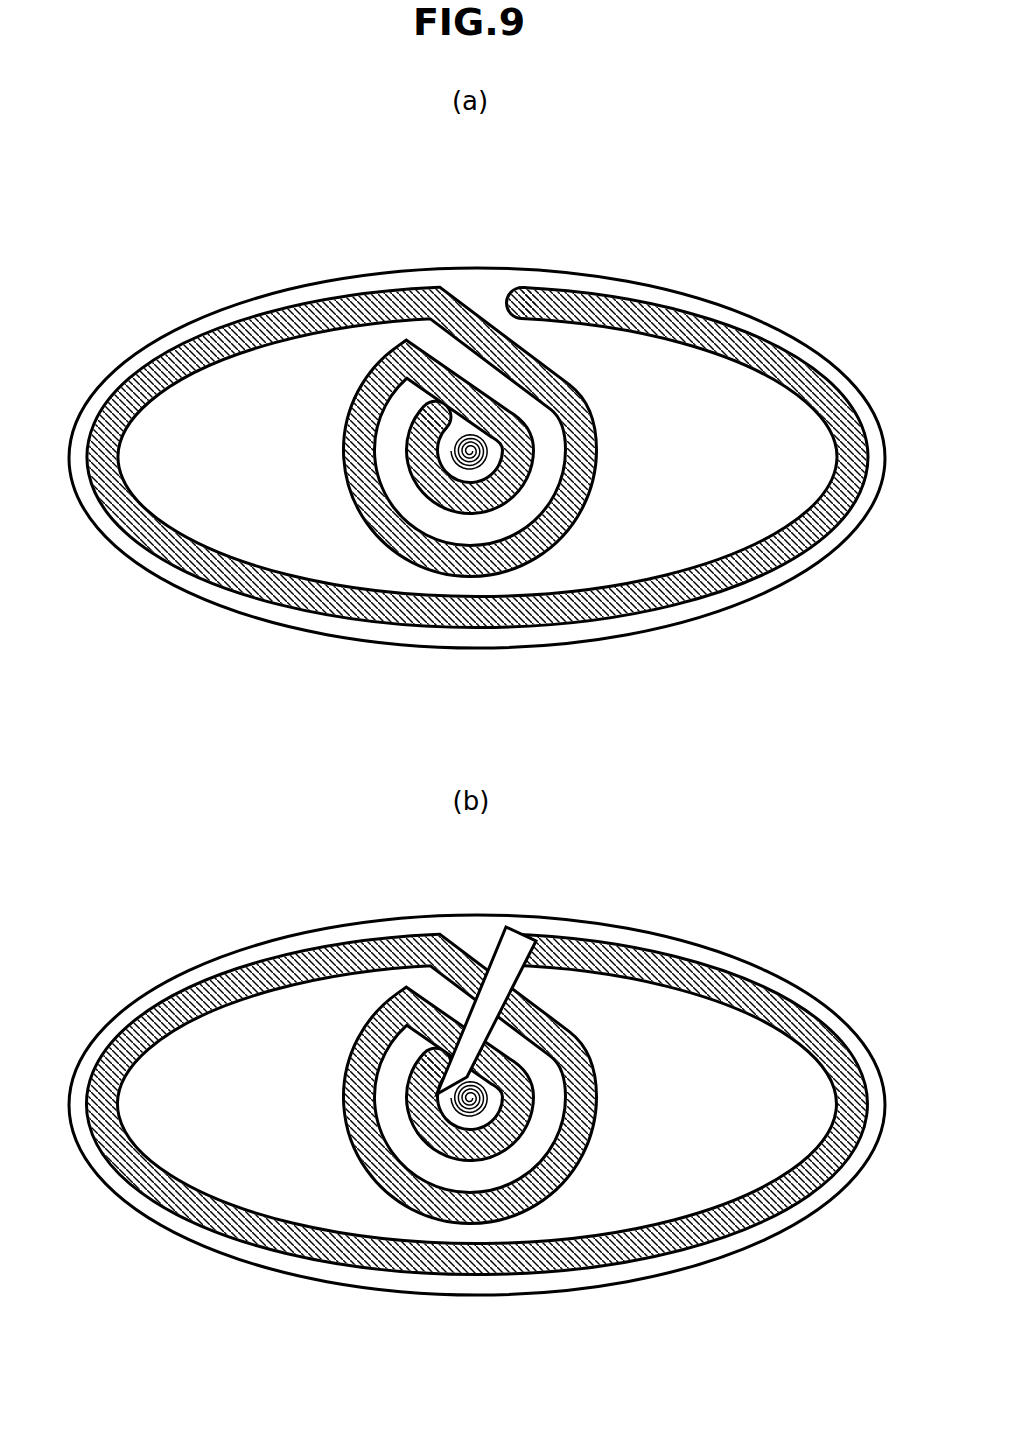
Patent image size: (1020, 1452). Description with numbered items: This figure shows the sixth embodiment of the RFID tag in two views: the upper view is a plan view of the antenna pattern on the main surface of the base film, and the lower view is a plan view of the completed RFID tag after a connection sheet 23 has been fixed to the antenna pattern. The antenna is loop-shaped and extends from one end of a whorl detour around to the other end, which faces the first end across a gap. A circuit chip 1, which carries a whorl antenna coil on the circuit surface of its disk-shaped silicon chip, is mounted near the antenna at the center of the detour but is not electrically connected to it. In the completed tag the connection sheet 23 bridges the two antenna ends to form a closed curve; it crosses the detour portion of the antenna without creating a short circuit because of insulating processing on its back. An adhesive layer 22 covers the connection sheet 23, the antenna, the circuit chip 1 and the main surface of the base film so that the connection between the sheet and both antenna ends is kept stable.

The circuit chip 1 is at (477, 428).
The adhesive layer 22 is at (412, 1078).
The connection sheet 23 is at (382, 1038).